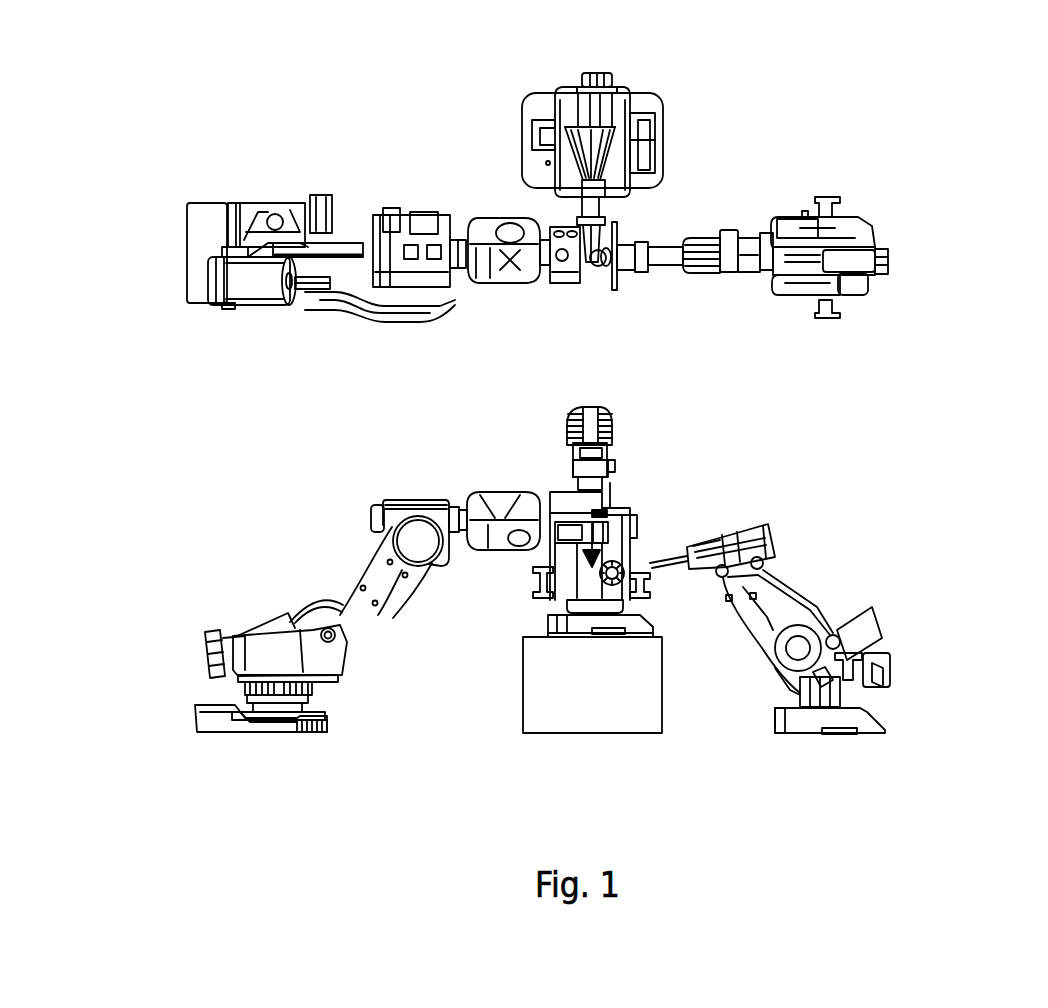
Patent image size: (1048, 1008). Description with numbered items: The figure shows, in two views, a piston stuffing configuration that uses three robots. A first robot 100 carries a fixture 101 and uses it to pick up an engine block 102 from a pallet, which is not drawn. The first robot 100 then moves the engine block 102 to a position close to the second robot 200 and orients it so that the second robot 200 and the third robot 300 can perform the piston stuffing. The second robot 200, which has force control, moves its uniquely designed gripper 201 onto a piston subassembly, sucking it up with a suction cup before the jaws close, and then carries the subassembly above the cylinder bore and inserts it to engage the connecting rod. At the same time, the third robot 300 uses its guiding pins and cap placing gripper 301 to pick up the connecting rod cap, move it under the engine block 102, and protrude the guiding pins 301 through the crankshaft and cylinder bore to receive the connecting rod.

The first robot 100 is at (287, 207).
The second robot 200 is at (613, 93).
The third robot 300 is at (843, 213).
The engine block 102 is at (554, 287).
The gripper 201 is at (577, 468).
The fixture 101 is at (615, 508).
The guiding pins and cap placing gripper 301 is at (588, 572).